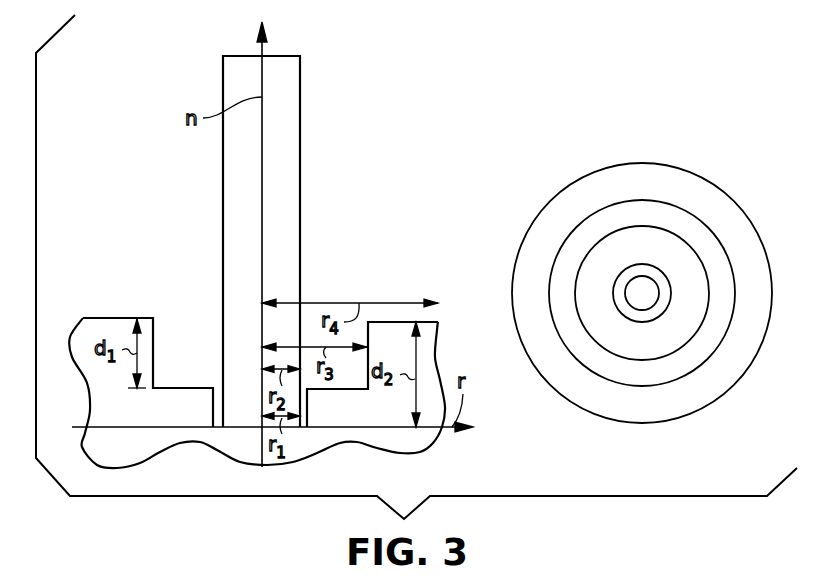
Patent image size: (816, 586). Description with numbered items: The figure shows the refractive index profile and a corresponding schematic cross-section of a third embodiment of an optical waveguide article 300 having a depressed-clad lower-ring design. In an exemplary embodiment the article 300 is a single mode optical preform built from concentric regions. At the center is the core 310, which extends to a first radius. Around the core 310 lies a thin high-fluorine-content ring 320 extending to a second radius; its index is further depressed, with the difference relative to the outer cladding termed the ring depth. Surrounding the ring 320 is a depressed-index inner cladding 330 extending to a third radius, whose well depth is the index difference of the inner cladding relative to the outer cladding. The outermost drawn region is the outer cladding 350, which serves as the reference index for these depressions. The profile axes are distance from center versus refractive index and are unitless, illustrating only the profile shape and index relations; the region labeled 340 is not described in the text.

The optical waveguide article 300 is at (634, 325).
The core 310 is at (642, 298).
The high-fluorine-content ring 320 is at (651, 313).
The inner cladding 330 is at (667, 343).
The outer cladding region 340 is at (728, 376).
The outer cladding 350 is at (683, 362).